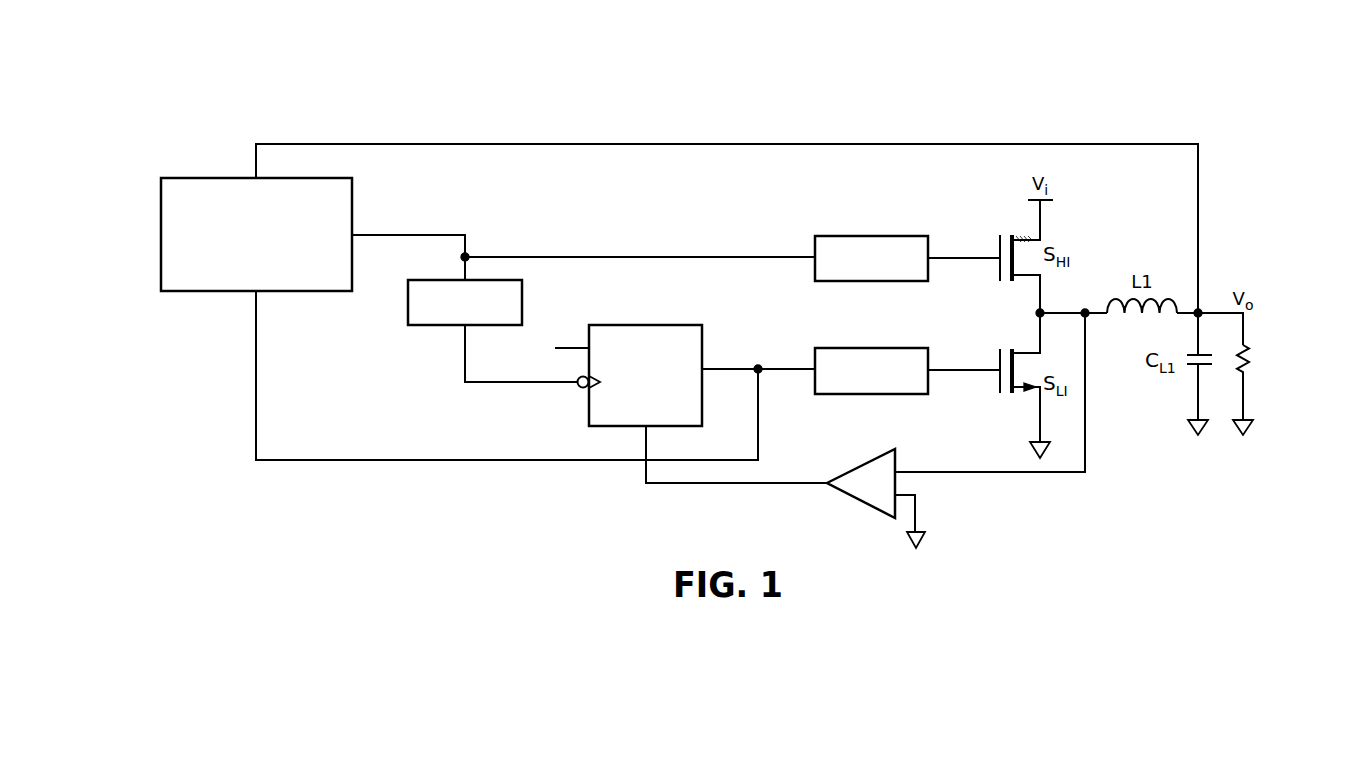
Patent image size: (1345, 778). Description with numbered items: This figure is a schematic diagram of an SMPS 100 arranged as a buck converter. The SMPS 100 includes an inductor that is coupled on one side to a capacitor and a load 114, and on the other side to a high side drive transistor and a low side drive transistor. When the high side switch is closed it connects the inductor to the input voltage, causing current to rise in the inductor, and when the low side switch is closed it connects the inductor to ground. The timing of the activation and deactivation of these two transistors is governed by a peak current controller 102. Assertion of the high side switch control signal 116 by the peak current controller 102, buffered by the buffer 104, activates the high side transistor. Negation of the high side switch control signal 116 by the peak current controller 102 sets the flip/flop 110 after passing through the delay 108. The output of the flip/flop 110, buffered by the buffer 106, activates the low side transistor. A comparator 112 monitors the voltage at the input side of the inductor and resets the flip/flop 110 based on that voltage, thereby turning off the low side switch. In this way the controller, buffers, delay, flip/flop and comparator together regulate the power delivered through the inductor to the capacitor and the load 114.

The SMPS 100 is at (938, 77).
The peak current controller 102 is at (217, 177).
The buffer 104 is at (872, 236).
The buffer 106 is at (872, 348).
The delay 108 is at (443, 326).
The flip/flop 110 is at (588, 415).
The comparator 112 is at (863, 465).
The load 114 is at (1248, 360).
The high side switch control signal 116 is at (432, 235).